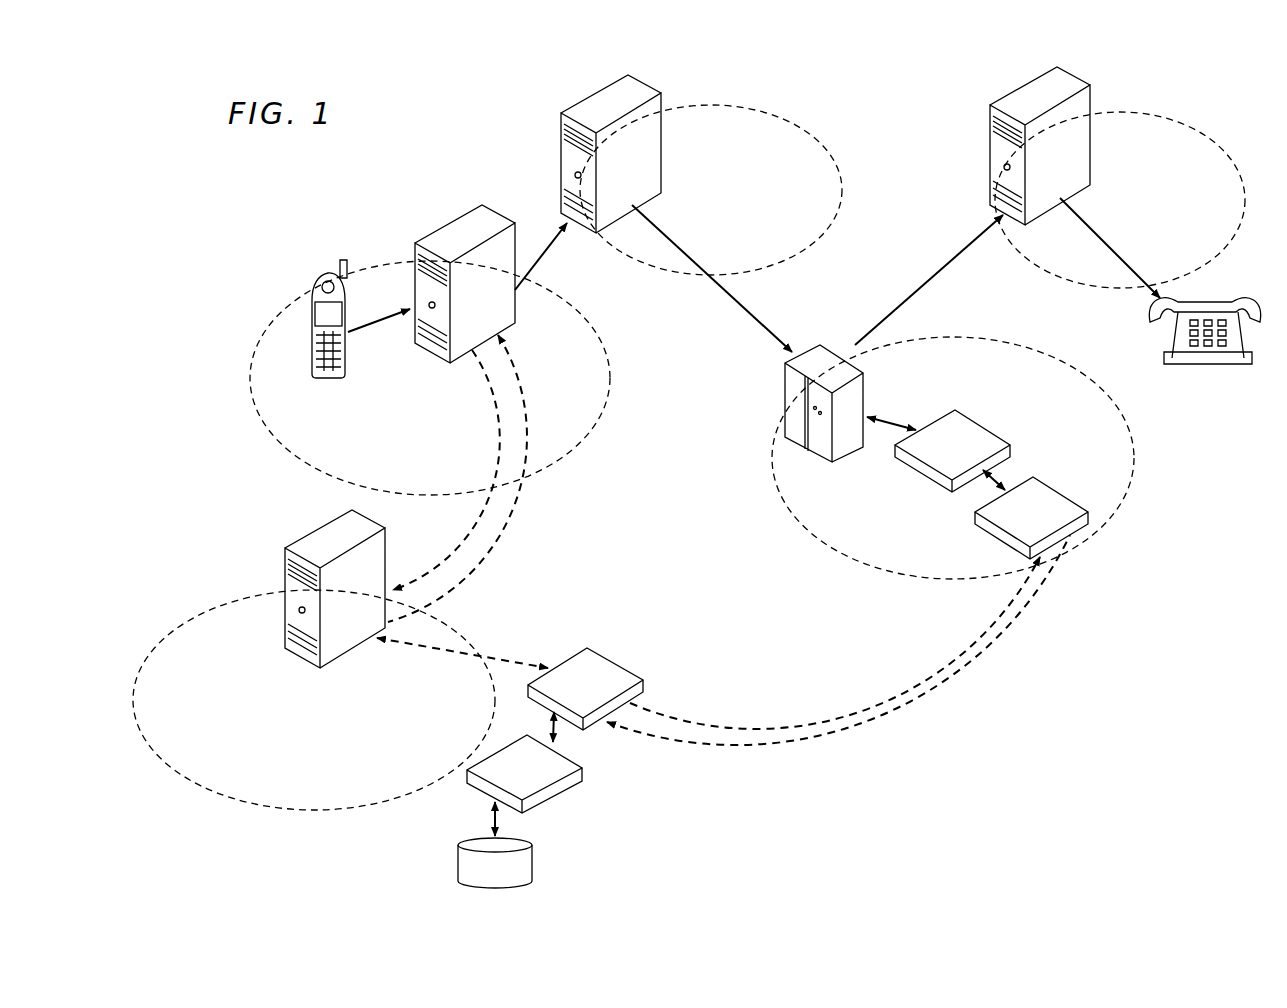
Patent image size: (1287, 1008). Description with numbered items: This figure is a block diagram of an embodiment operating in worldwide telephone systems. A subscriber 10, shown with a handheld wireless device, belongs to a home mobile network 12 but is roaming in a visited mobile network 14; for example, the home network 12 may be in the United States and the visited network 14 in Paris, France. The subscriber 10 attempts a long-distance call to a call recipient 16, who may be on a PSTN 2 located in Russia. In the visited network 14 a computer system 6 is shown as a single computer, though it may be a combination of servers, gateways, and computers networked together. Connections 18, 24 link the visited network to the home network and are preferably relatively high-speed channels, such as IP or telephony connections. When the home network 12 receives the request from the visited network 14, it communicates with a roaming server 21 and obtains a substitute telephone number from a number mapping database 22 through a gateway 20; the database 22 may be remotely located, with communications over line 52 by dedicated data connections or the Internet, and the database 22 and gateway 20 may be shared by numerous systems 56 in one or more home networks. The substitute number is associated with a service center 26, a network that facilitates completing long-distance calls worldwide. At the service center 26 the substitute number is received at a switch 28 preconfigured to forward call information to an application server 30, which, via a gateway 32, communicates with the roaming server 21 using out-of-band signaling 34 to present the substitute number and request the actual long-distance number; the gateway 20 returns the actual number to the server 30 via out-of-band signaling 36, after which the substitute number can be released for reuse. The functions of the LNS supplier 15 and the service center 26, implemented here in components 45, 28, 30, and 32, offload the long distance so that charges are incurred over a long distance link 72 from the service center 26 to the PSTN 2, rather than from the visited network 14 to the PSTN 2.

The PSTN network 2 is at (1193, 128).
The computer system 6 is at (458, 229).
The subscriber 10 is at (313, 291).
The home mobile network 12 is at (201, 786).
The visited mobile network 14 is at (262, 425).
The LNS supplier 15 is at (791, 120).
The call recipient 16 is at (1233, 298).
The connection 18 is at (468, 558).
The gateway 20 is at (613, 665).
The roaming server 21 is at (566, 790).
The number mapping database 22 is at (458, 871).
The connection 24 is at (514, 552).
The service center 26 is at (1100, 528).
The switch 28 is at (784, 400).
The application server 30 is at (978, 422).
The gateway 32 is at (1060, 490).
The out-of-band signaling 34 is at (960, 690).
The out-of-band signaling 36 is at (868, 702).
The LNS 45 is at (586, 108).
The line 52 is at (437, 655).
The server 56 is at (318, 541).
The long distance connection 72 is at (922, 282).